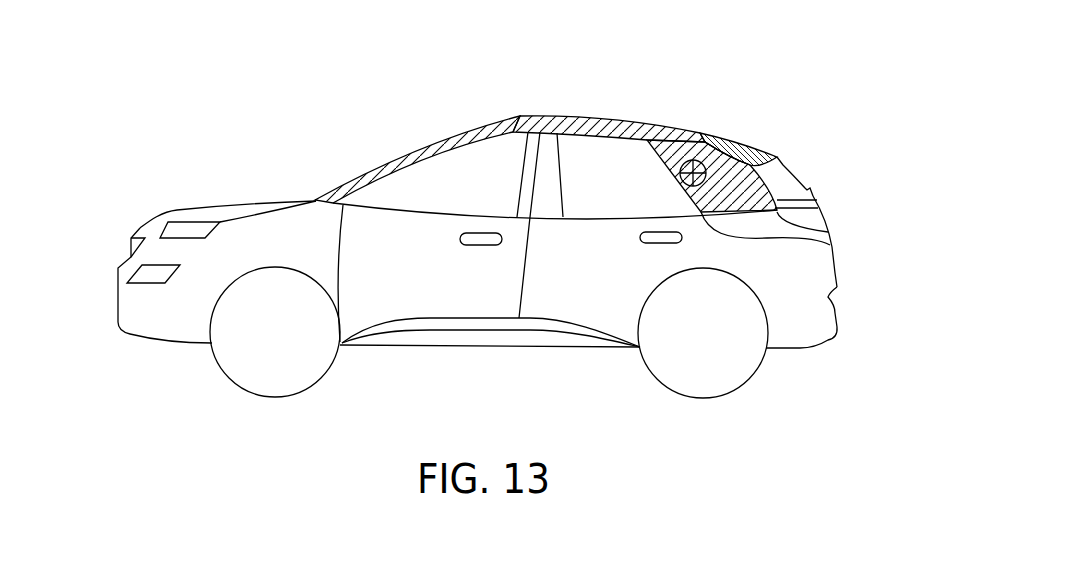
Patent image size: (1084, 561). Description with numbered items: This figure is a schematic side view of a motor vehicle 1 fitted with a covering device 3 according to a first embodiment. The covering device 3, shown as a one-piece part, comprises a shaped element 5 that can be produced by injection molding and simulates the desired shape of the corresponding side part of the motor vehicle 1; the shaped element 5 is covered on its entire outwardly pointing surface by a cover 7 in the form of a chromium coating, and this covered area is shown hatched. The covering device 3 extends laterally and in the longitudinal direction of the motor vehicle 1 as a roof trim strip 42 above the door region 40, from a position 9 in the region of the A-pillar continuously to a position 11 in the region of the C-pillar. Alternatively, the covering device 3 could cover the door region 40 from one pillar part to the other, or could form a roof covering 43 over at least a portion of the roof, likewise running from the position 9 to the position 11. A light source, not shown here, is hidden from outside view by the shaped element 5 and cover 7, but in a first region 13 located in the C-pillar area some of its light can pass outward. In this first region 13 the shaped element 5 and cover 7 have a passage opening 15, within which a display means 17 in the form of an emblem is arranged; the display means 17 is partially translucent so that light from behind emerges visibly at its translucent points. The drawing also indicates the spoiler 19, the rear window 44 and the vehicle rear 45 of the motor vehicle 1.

The motor vehicle 1 is at (155, 107).
The covering device 3 is at (549, 107).
The roof trim strip 42 is at (523, 107).
The roof covering 43 is at (568, 107).
The shaped element 5 is at (702, 128).
The cover 7 is at (667, 143).
The first region 13 is at (705, 160).
The spoiler 19 is at (733, 130).
The passage opening 15 is at (717, 160).
The rear window 44 is at (795, 153).
The position in the region of the C-pillar 11 is at (773, 178).
The vehicle rear 45 is at (840, 217).
The display means 17 is at (831, 240).
The position in the region of the A-pillar 9 is at (312, 192).
The door region 40 is at (550, 287).